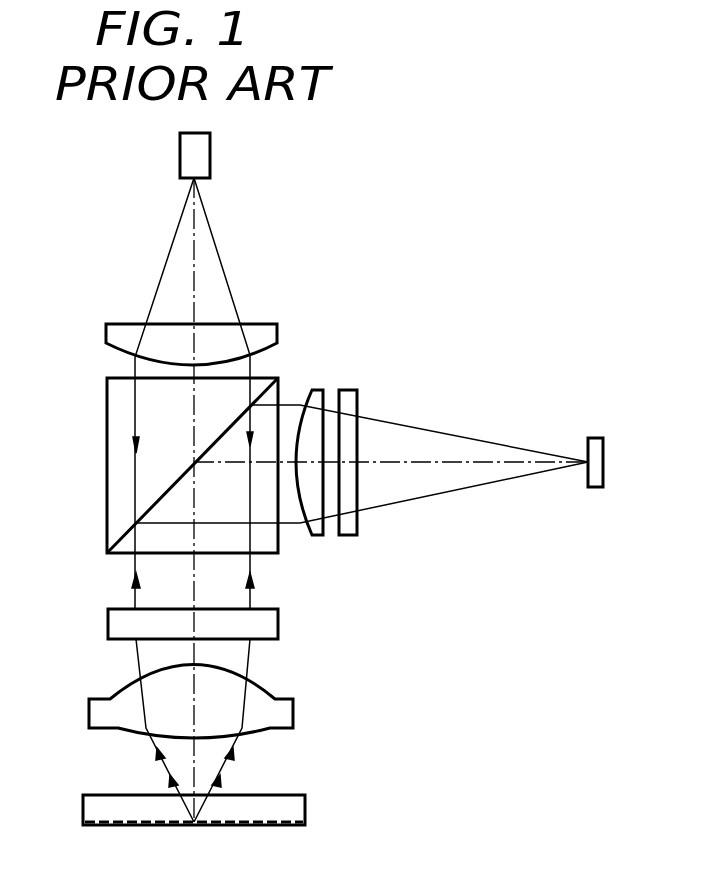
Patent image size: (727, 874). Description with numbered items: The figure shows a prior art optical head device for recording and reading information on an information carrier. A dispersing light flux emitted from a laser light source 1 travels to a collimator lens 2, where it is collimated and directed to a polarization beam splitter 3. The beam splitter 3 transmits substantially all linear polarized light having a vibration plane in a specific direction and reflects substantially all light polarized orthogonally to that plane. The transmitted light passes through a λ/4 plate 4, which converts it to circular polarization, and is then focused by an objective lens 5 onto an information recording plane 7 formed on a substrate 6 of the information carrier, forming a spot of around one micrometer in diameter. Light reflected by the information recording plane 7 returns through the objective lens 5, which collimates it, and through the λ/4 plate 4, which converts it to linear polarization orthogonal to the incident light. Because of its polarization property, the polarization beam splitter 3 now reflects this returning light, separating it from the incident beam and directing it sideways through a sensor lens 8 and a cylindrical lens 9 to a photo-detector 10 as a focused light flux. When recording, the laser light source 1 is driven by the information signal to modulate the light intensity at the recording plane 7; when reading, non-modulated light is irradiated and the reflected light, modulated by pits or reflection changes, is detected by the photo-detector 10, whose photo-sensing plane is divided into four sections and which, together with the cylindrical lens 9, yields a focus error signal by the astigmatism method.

The laser light source 1 is at (212, 145).
The collimator lens 2 is at (106, 328).
The polarization beam splitter 3 is at (107, 396).
The λ/4 plate 4 is at (280, 622).
The objective lens 5 is at (294, 708).
The substrate 6 is at (273, 796).
The information recording plane 7 is at (268, 826).
The sensor lens 8 is at (311, 390).
The cylindrical lens 9 is at (345, 390).
The photo-detector 10 is at (594, 438).